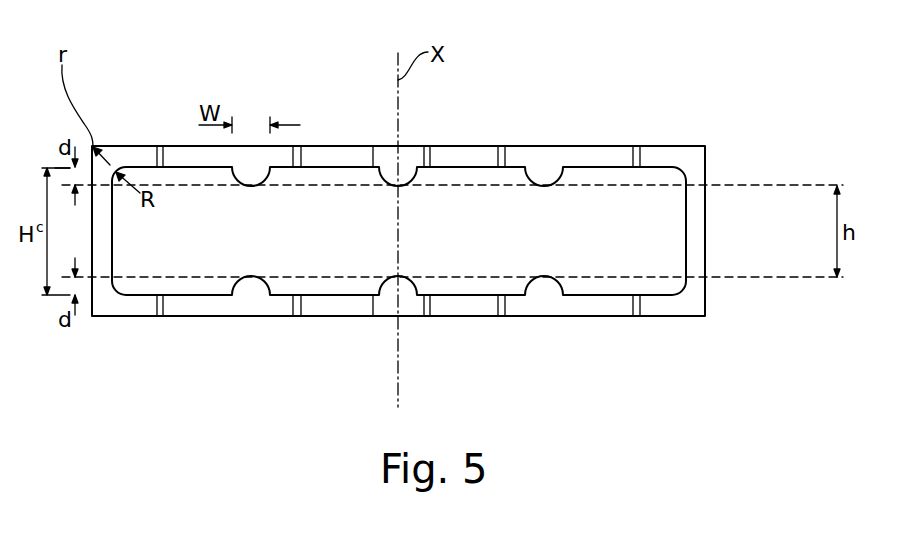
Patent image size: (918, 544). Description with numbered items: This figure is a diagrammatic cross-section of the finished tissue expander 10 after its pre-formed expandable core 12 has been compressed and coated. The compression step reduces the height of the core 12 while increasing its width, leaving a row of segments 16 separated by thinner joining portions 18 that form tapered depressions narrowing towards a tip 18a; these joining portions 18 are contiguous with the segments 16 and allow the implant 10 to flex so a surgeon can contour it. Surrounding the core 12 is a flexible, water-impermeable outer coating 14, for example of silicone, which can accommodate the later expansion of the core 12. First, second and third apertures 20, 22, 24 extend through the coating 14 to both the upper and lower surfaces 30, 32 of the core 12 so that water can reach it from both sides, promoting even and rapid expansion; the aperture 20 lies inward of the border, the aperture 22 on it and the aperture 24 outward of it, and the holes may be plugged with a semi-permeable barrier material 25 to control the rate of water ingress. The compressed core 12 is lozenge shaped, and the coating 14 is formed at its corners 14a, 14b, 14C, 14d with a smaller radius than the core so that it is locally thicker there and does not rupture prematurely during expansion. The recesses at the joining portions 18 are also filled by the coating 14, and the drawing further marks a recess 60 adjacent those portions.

The tissue expander 10 is at (610, 122).
The core 12 is at (653, 212).
The outer coating 14 is at (615, 233).
The corner of coating 14a is at (130, 168).
The corner of coating 14b is at (413, 218).
The corner of coating 14C is at (688, 290).
The corner of coating 14d is at (128, 289).
The segment 16 is at (177, 237).
The joining portion 18 is at (197, 218).
The tip 18a is at (253, 291).
The first aperture 20 is at (411, 307).
The second aperture 22 is at (295, 293).
The third aperture 24 is at (163, 146).
The semi-permeable barrier material 25 is at (678, 367).
The upper surface of core 30 is at (345, 172).
The lower surface of core 32 is at (573, 290).
The recess 60 is at (255, 177).